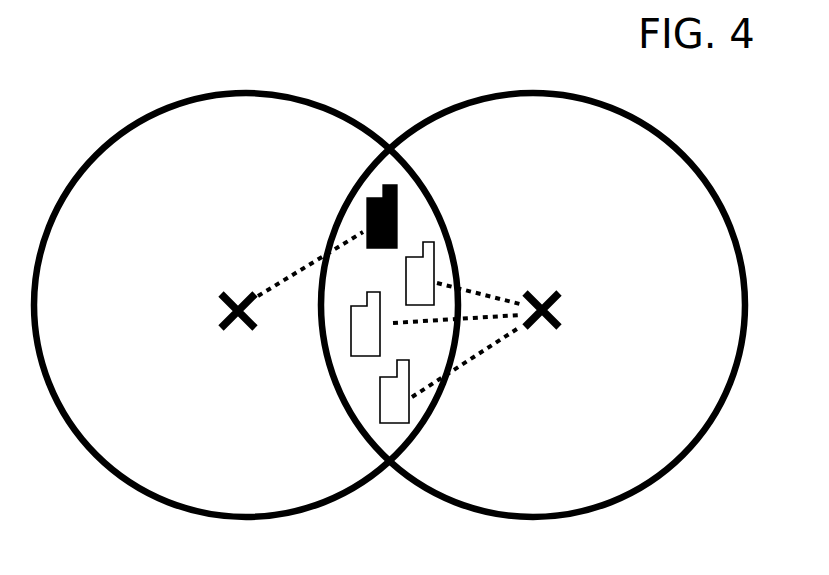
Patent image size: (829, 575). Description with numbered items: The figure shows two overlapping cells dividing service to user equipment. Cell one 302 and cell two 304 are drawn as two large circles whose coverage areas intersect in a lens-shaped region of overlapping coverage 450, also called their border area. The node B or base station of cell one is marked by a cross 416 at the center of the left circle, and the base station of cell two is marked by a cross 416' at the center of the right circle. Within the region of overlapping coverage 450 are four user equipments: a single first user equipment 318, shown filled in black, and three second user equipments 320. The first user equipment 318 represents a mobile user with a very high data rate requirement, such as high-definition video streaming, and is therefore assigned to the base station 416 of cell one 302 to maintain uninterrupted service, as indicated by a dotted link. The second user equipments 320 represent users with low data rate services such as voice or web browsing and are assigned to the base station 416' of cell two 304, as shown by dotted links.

The cell one 302 is at (115, 137).
The cell two 304 is at (703, 177).
The first user equipment 318 is at (400, 210).
The second user equipments 320 is at (434, 264).
The base station of cell one 416 is at (249, 280).
The base station of cell two 416' is at (526, 329).
The region of overlapping coverage 450 is at (388, 440).